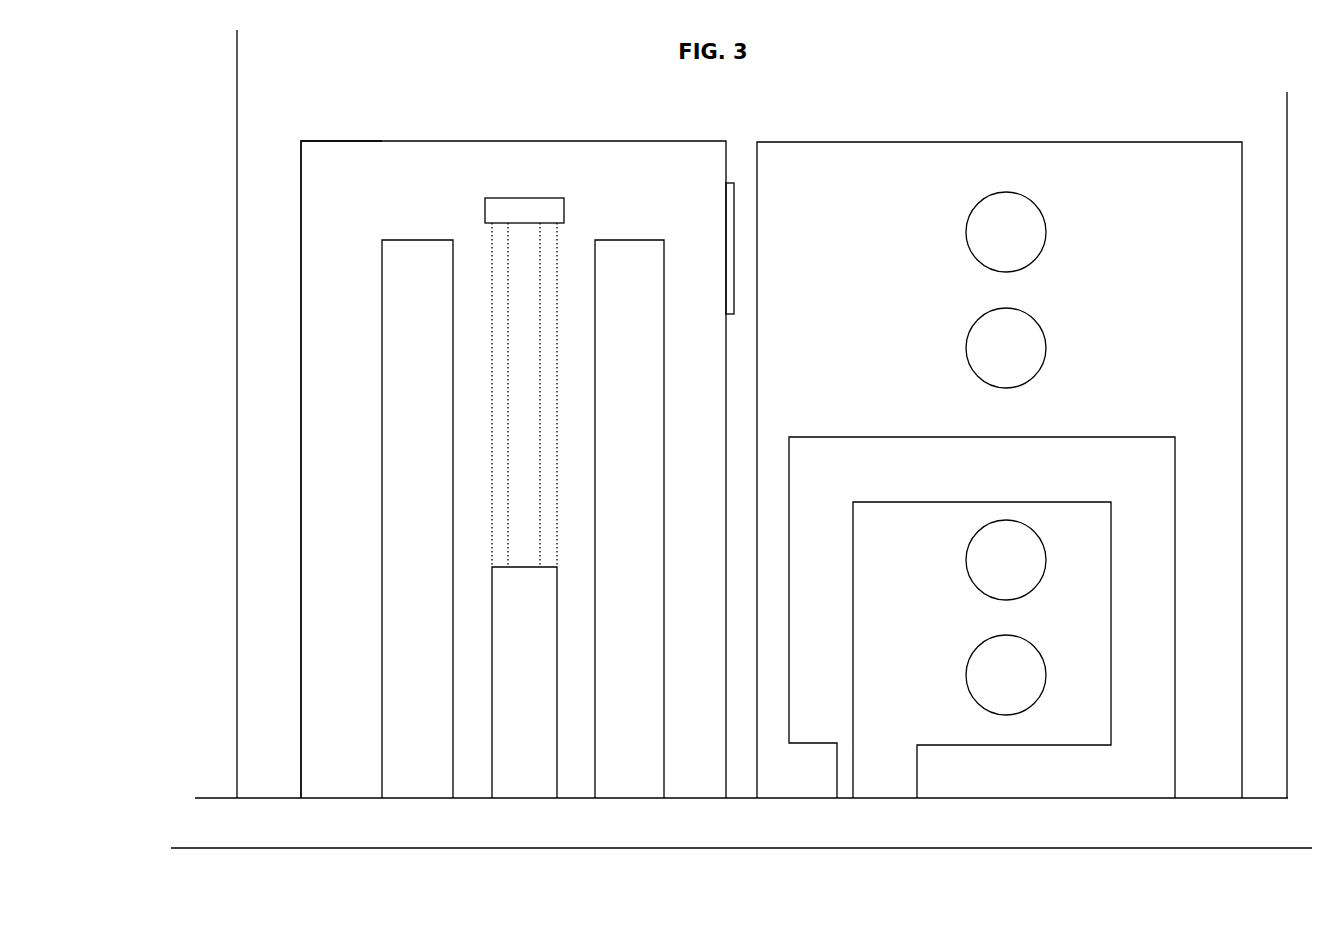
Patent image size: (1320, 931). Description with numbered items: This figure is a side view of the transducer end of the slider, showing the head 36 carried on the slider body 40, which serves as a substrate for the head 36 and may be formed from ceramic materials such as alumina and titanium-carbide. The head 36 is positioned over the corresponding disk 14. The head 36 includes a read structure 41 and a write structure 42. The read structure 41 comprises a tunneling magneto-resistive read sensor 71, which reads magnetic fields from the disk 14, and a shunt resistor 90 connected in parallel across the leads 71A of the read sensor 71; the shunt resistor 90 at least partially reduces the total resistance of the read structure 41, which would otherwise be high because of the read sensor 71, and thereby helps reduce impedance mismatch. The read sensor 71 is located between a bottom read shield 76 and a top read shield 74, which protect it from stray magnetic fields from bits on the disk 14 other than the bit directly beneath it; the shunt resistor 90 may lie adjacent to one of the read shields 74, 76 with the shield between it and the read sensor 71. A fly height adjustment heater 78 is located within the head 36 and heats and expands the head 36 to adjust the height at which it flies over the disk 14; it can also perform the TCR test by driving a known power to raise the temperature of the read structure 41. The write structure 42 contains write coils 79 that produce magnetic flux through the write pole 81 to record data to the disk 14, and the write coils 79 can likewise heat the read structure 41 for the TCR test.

The head 36 is at (322, 87).
The read structure 41 is at (332, 347).
The bottom read shield 76 is at (442, 297).
The shunt resistor 90 is at (508, 207).
The leads 71A is at (548, 413).
The tunneling magneto-resistive (TuMR) read sensor 71 is at (522, 782).
The top read shield 74 is at (635, 281).
The fly height adjustment (FHA) heater 78 is at (732, 202).
The write structure 42 is at (870, 215).
The write coils 79 is at (1006, 453).
The write pole 81 is at (844, 787).
The slider body 40 is at (181, 755).
The disk 14 is at (237, 848).